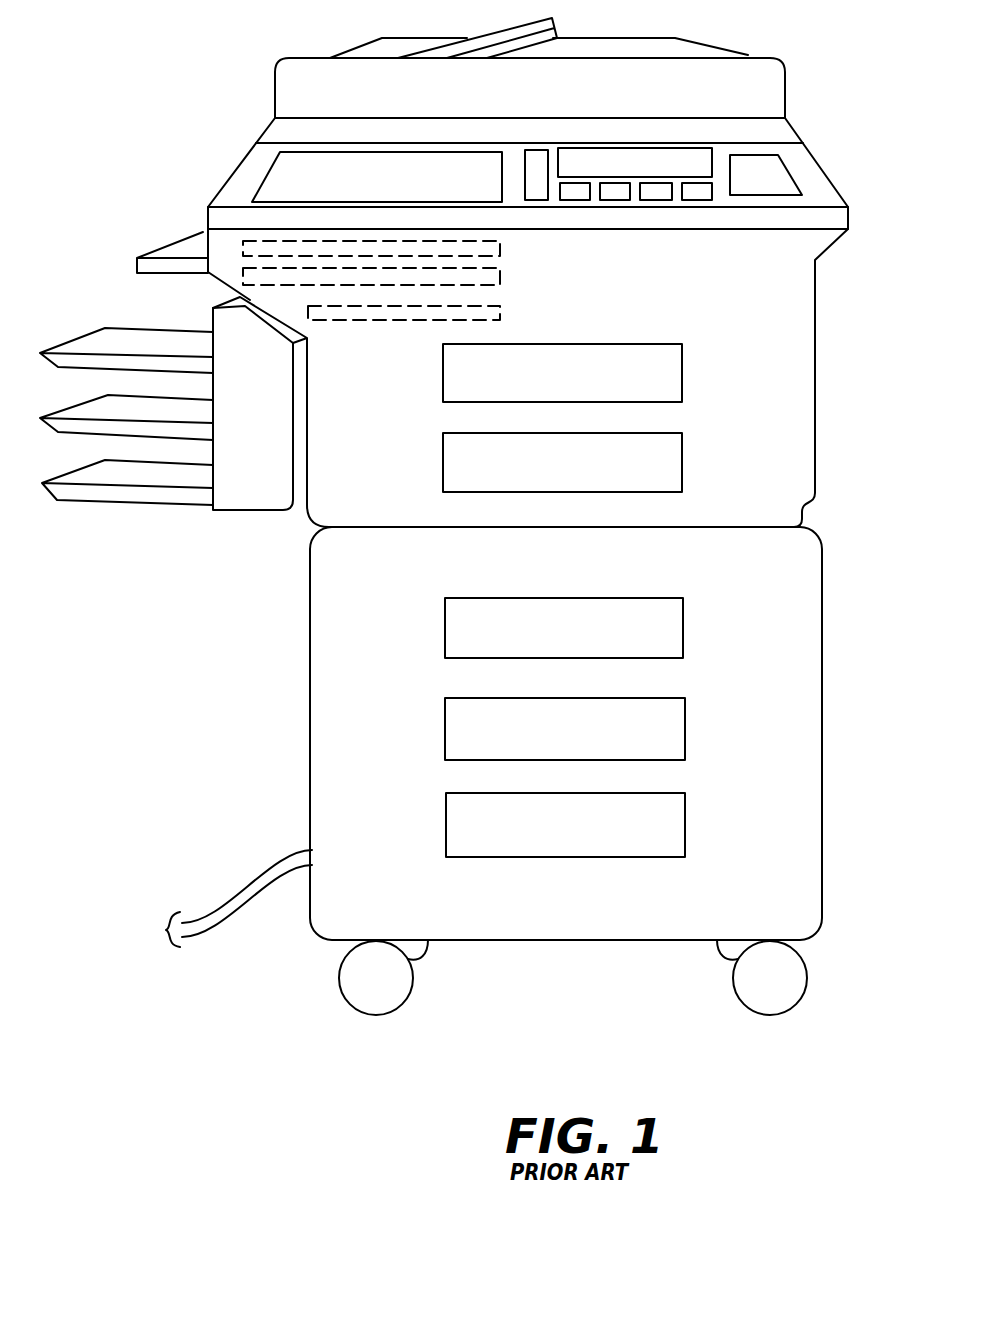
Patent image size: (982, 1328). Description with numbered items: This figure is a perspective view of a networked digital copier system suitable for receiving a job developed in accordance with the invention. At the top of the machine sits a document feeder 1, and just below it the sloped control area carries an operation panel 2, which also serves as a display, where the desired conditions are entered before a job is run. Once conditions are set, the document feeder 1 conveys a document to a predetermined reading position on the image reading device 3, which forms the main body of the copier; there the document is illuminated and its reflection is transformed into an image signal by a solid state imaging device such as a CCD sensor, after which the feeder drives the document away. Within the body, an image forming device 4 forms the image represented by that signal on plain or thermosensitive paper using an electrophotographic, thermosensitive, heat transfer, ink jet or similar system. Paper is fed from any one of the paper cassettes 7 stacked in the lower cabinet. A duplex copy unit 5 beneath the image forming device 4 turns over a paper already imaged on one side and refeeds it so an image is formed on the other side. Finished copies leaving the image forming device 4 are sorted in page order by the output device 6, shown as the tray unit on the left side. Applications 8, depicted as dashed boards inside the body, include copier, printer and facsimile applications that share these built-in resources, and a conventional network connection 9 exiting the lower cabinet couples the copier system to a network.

The document feeder 1 is at (767, 73).
The operation panel 2 is at (288, 153).
The image reading device 3 is at (228, 163).
The image forming device 4 is at (682, 351).
The duplex copy unit 5 is at (682, 464).
The output device 6 is at (142, 515).
The paper cassettes 7 is at (683, 618).
The applications 8 is at (546, 274).
The network connection 9 is at (232, 884).